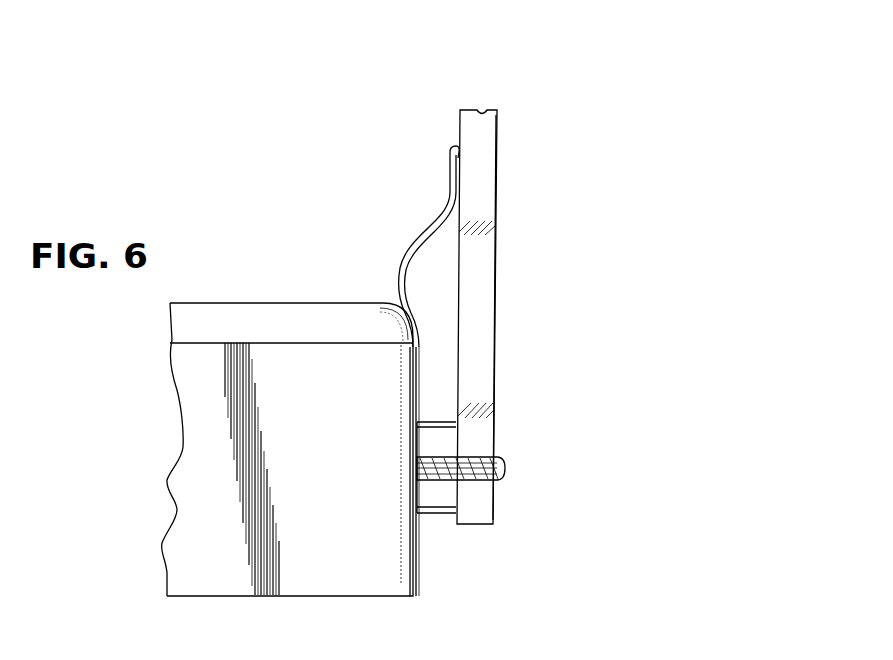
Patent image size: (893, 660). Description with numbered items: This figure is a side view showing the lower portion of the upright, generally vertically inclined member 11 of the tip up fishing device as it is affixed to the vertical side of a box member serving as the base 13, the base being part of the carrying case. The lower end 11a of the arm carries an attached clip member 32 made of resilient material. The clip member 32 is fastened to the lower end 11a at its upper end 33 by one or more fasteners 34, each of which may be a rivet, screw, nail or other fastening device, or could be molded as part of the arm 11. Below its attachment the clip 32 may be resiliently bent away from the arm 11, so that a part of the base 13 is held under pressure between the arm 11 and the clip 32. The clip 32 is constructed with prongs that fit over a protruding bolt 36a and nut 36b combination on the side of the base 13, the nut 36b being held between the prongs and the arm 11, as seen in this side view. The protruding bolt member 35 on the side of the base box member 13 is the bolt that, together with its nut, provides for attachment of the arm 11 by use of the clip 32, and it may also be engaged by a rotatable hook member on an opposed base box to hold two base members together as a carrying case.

The vertically inclined member 11 is at (574, 67).
The lower end 11a is at (480, 325).
The base 13 is at (160, 541).
The clip member 32 is at (400, 257).
The upper end 33 is at (455, 145).
The fastener 34 is at (448, 173).
The protruding bolt member 35 is at (416, 532).
The bolt 36a is at (505, 462).
The nut 36b is at (443, 495).